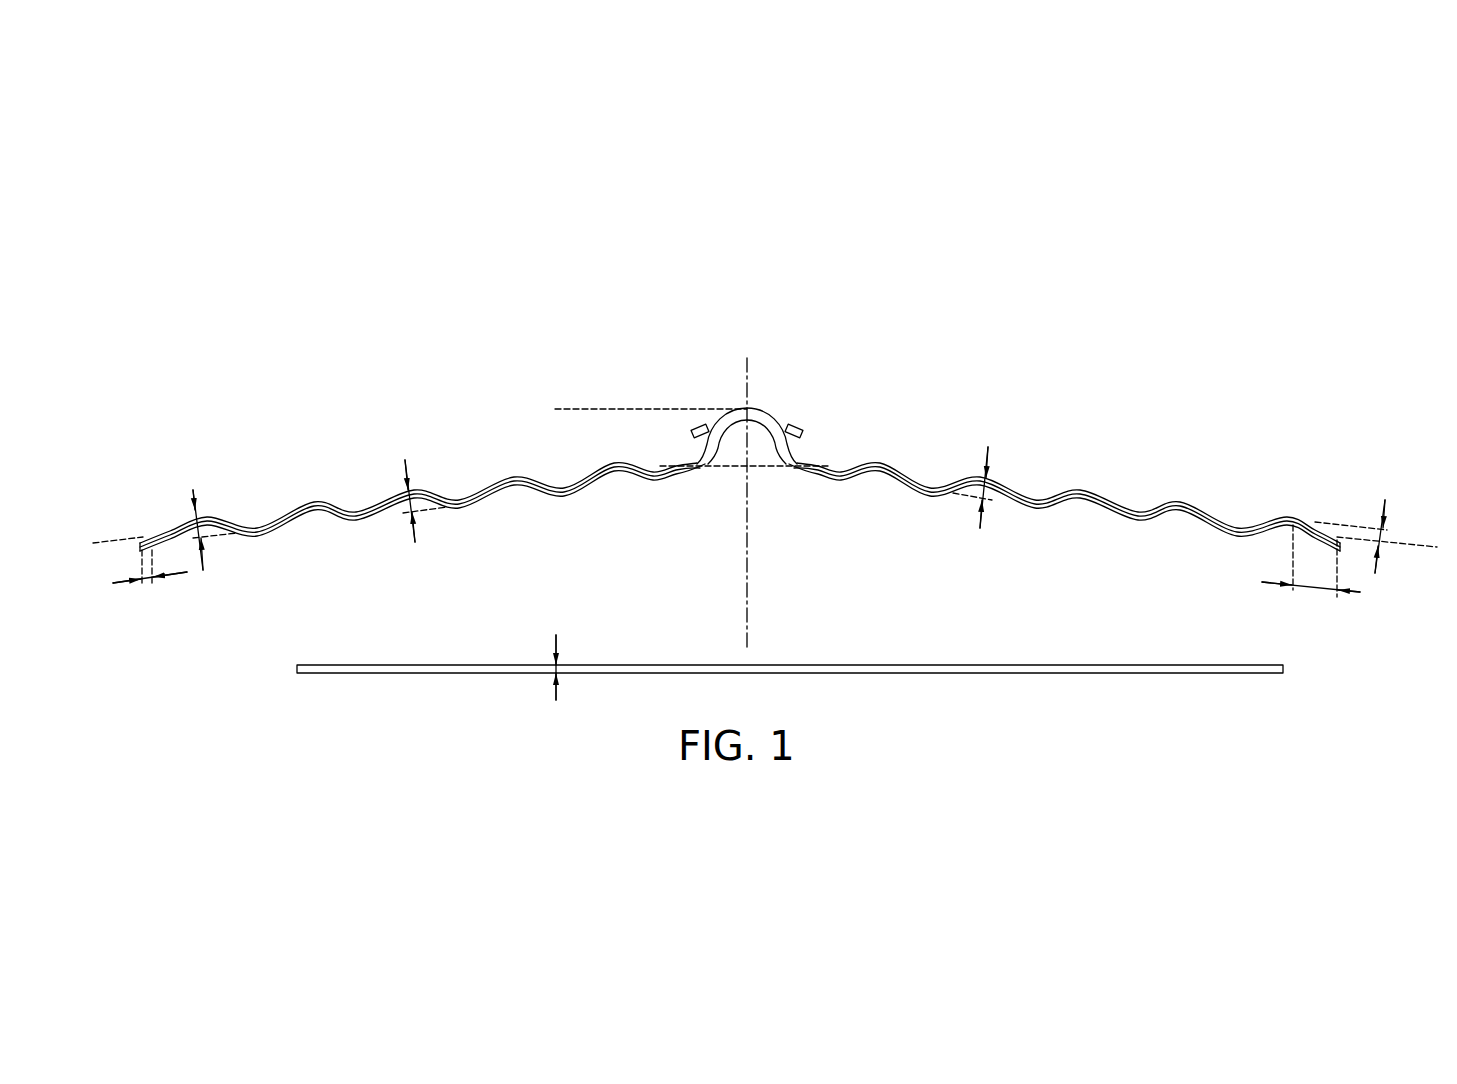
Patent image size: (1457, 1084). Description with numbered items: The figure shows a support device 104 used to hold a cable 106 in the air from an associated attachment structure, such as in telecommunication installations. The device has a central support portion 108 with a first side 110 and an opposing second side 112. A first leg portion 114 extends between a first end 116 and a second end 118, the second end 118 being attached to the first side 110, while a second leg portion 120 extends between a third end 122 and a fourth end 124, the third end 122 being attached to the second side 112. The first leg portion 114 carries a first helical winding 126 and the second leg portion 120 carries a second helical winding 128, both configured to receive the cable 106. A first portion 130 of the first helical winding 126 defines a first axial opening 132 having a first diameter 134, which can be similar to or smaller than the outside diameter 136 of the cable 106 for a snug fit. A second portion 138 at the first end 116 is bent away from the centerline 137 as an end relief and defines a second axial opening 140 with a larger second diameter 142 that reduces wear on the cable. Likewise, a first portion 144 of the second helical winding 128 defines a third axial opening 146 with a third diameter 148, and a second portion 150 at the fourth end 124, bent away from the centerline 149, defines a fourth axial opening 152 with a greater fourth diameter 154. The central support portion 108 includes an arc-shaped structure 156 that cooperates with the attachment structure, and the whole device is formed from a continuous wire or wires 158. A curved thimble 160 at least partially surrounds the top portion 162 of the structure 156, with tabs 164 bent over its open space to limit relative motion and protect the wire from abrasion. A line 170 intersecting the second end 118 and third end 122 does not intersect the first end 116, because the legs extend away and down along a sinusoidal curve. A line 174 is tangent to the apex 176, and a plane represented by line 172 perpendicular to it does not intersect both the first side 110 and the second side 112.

The support device 104 is at (680, 330).
The cable 106 is at (468, 665).
The central support portion 108 is at (790, 400).
The first side 110 is at (675, 452).
The second side 112 is at (808, 463).
The first leg portion 114 is at (486, 483).
The first end 116 is at (193, 433).
The second end 118 is at (693, 472).
The second leg portion 120 is at (966, 476).
The third end 122 is at (803, 472).
The fourth end 124 is at (1312, 470).
The first helical winding 126 is at (303, 503).
The second helical winding 128 is at (1075, 492).
The first portion of the first helical winding 130 is at (350, 532).
The first axial opening 132 is at (315, 520).
The first diameter 134 is at (420, 445).
The outside diameter 136 is at (556, 697).
The centerline 137 is at (115, 540).
The second portion of the first helical winding 138 is at (152, 585).
The second axial opening 140 is at (218, 550).
The second diameter 142 is at (198, 492).
The first portion of the second helical winding 144 is at (1100, 494).
The third axial opening 146 is at (888, 486).
The third diameter 148 is at (986, 498).
The centerline 149 is at (1420, 548).
The second portion of the second helical winding 150 is at (1310, 585).
The fourth axial opening 152 is at (1280, 537).
The fourth diameter 154 is at (1377, 581).
The structure 156 is at (788, 415).
The continuous wire or wires 158 is at (1206, 514).
The thimble 160 is at (772, 452).
The top portion 162 is at (722, 411).
The tabs 164 is at (697, 424).
The line 170 is at (733, 470).
The line 172 is at (745, 604).
The line 174 is at (570, 409).
The apex 176 is at (772, 411).